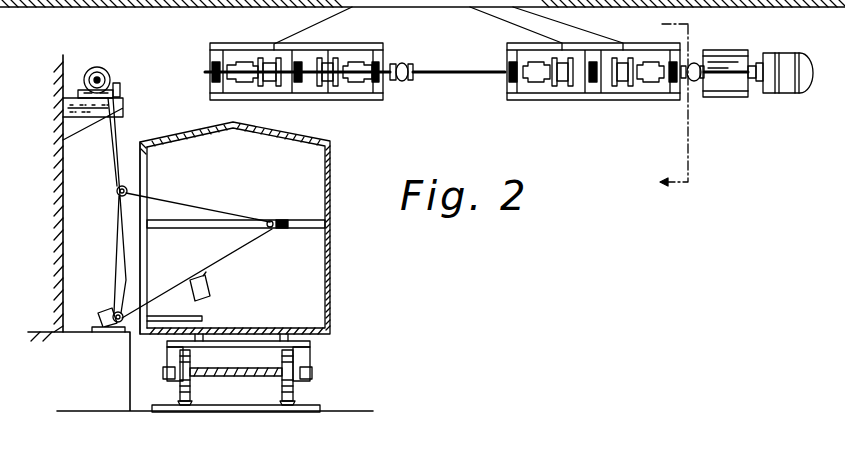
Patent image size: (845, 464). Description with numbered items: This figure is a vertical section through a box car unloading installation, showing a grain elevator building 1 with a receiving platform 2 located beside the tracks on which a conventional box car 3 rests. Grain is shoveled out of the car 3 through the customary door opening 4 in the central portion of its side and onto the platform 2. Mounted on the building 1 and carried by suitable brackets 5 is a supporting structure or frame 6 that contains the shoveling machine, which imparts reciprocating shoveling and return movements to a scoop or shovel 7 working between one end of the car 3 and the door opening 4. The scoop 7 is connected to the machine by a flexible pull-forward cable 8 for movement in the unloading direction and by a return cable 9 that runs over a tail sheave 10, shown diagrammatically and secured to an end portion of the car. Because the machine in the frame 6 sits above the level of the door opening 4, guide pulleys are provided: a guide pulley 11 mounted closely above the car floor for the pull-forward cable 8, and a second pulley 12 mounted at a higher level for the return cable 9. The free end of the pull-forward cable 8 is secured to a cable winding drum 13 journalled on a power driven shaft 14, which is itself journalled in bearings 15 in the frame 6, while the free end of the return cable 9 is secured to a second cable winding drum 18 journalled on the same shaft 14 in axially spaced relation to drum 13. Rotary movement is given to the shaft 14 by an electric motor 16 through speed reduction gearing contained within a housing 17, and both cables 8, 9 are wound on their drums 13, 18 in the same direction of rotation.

The building 1 is at (73, 241).
The receiving platform 2 is at (70, 330).
The box car 3 is at (333, 262).
The opening 4 is at (437, 8).
The brackets 5 is at (74, 127).
The supporting structure 6 is at (86, 78).
The scoop 7 is at (203, 277).
The pull-forward cable 8 is at (158, 306).
The return cable 9 is at (221, 218).
The tail sheave 10 is at (270, 220).
The guide pulley 11 is at (117, 308).
The pulley 12 is at (130, 191).
The cable winding drum 13 is at (97, 67).
The power driven shaft 14 is at (104, 82).
The bearings 15 is at (212, 68).
The electric motor 16 is at (790, 96).
The housing 17 is at (732, 96).
The second cable winding drum 18 is at (326, 85).